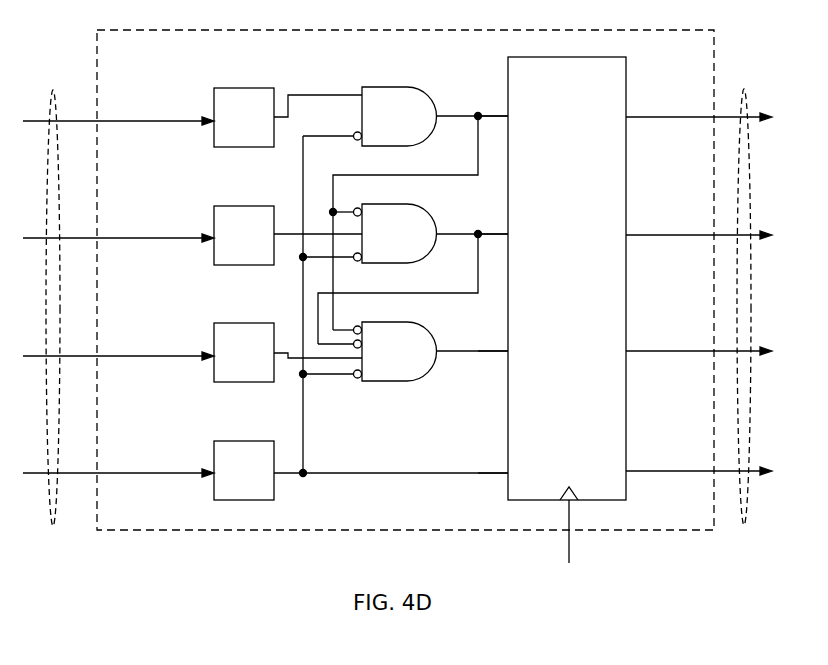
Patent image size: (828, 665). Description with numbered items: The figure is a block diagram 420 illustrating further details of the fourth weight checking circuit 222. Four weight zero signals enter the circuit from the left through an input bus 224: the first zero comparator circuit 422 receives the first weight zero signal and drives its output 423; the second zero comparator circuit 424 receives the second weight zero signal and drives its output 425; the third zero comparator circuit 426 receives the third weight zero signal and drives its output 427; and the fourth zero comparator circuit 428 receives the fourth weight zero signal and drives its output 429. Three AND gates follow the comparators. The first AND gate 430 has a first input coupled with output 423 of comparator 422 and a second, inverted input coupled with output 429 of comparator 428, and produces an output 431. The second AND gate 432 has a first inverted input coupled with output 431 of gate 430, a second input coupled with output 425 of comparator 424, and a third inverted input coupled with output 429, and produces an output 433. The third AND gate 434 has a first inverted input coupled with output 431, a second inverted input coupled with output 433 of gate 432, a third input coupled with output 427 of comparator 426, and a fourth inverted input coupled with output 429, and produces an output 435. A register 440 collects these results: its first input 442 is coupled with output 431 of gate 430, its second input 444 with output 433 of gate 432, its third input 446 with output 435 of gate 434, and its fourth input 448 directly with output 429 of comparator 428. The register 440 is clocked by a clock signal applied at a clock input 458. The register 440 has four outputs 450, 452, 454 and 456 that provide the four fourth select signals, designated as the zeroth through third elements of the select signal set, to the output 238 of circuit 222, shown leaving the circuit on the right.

The block diagram of fourth weight checking circuit 420 is at (77, 41).
The fourth weight checking circuit 222 is at (680, 30).
The input bus WT_ZERO 224 is at (55, 531).
The output of circuit 238 is at (745, 527).
The first zero comparator circuit 422 is at (230, 87).
The output of first zero comparator circuit 423 is at (277, 148).
The second zero comparator circuit 424 is at (222, 205).
The output of second zero comparator circuit 425 is at (277, 207).
The third zero comparator circuit 426 is at (222, 322).
The output of third zero comparator circuit 427 is at (277, 383).
The fourth zero comparator circuit 428 is at (222, 440).
The output of fourth zero comparator circuit 429 is at (277, 502).
The first AND gate 430 is at (408, 87).
The output of first AND gate 431 is at (435, 133).
The second AND gate 432 is at (399, 204).
The output of second AND gate 433 is at (438, 250).
The third AND gate 434 is at (399, 322).
The output of third AND gate 435 is at (438, 367).
The register 440 is at (583, 290).
The first input of register 442 is at (508, 115).
The second input of register 444 is at (508, 233).
The third input of register 446 is at (508, 350).
The fourth input of register 448 is at (508, 470).
The first output of register 450 is at (627, 119).
The second output of register 452 is at (627, 237).
The third output of register 454 is at (627, 353).
The fourth output of register 456 is at (627, 473).
The clock input CLK 458 is at (571, 501).